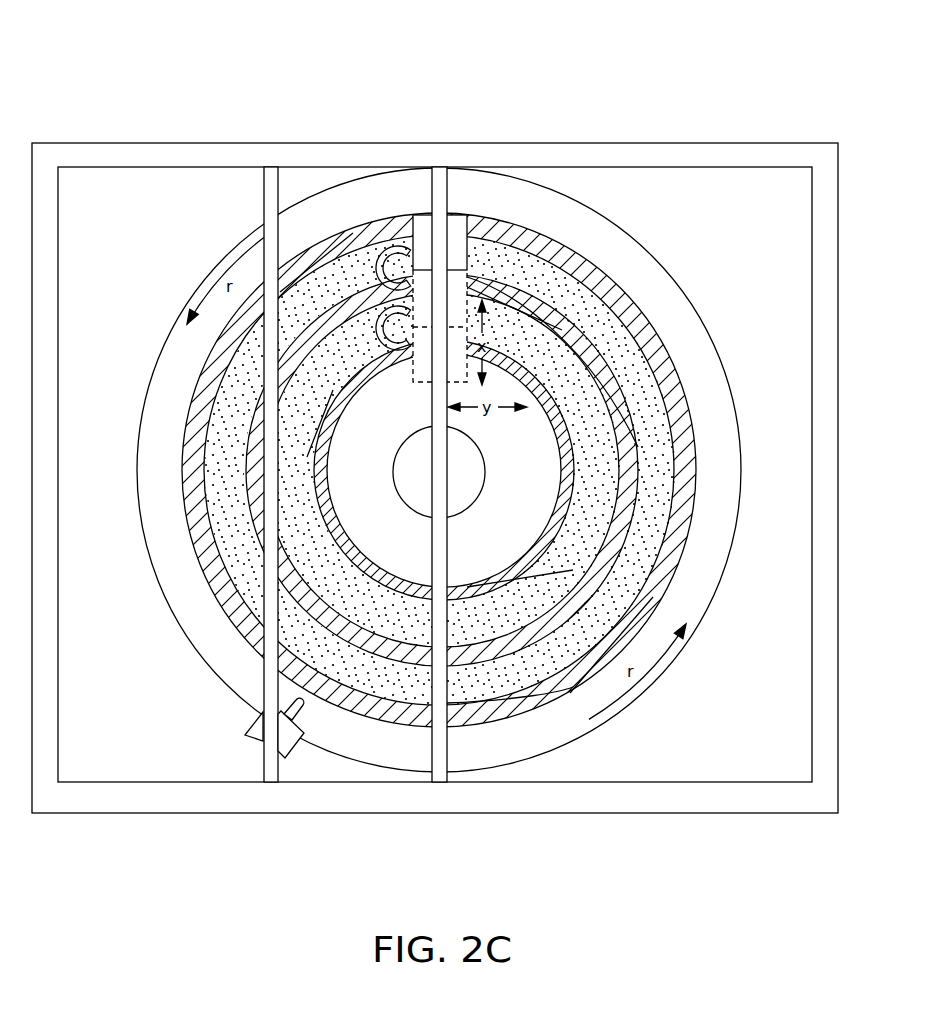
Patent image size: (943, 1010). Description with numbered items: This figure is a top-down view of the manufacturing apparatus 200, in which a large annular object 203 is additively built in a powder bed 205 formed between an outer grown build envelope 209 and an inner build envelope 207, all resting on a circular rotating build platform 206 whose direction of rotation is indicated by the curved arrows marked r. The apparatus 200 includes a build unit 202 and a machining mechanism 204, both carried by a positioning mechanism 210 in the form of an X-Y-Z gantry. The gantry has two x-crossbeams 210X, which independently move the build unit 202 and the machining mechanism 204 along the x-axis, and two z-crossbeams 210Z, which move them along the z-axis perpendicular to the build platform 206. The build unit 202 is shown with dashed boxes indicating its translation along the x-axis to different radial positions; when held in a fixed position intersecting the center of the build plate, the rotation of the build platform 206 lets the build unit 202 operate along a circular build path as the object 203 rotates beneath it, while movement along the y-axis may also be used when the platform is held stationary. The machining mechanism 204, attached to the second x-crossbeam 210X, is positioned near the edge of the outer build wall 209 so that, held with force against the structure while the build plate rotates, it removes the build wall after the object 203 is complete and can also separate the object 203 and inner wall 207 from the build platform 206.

The manufacturing apparatus 200 is at (213, 78).
The build unit 202 is at (452, 213).
The object 203 is at (620, 440).
The machining mechanism 204 is at (247, 735).
The powder bed 205 is at (612, 605).
The rotating build platform 206 is at (178, 596).
The inner build envelope 207 is at (566, 470).
The outer grown build envelope 209 is at (578, 262).
The positioning mechanism 210 is at (742, 144).
The x-crossbeam 210X is at (263, 212).
The z-crossbeam 210Z is at (63, 164).